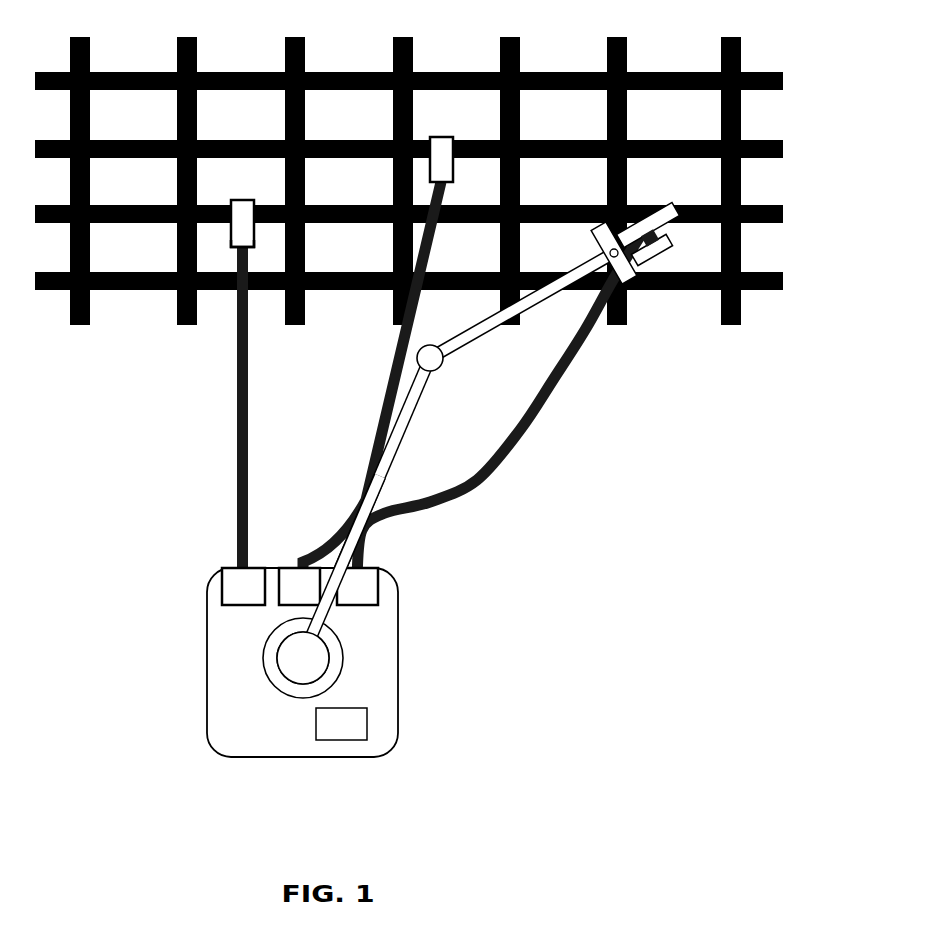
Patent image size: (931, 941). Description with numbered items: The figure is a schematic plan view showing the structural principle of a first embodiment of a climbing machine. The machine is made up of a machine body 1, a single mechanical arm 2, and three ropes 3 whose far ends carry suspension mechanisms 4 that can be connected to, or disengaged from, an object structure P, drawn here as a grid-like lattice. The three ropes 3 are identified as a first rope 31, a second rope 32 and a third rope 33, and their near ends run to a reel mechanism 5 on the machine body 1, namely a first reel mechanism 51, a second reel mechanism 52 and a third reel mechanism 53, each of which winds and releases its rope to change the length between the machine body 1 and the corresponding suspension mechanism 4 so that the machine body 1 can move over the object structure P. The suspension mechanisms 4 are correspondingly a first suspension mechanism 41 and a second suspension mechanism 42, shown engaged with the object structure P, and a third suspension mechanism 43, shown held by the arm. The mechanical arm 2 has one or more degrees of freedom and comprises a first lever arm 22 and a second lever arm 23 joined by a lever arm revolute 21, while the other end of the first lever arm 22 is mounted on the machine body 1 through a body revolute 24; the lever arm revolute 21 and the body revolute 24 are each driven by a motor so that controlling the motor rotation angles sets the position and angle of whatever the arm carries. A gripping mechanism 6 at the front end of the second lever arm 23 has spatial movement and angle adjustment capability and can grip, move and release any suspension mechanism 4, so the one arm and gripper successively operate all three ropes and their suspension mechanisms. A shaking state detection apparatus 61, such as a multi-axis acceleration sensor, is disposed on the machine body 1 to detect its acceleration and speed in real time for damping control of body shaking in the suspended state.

The object structure P is at (177, 43).
The machine body 1 is at (299, 631).
The mechanical arm 2 is at (462, 445).
The lever arm revolute 21 is at (443, 368).
The first lever arm 22 is at (400, 433).
The second lever arm 23 is at (480, 330).
The body revolute 24 is at (308, 660).
The rope 3 is at (387, 378).
The first rope 31 is at (237, 462).
The second rope 32 is at (406, 350).
The third rope 33 is at (547, 407).
The suspension mechanism 4 is at (242, 213).
The first suspension mechanism 41 is at (242, 233).
The second suspension mechanism 42 is at (442, 145).
The third suspension mechanism 43 is at (680, 230).
The reel mechanism 5 is at (287, 577).
The first reel mechanism 51 is at (232, 580).
The second reel mechanism 52 is at (297, 580).
The third reel mechanism 53 is at (367, 587).
The gripping mechanism 6 is at (657, 258).
The shaking state detection apparatus 61 is at (348, 722).